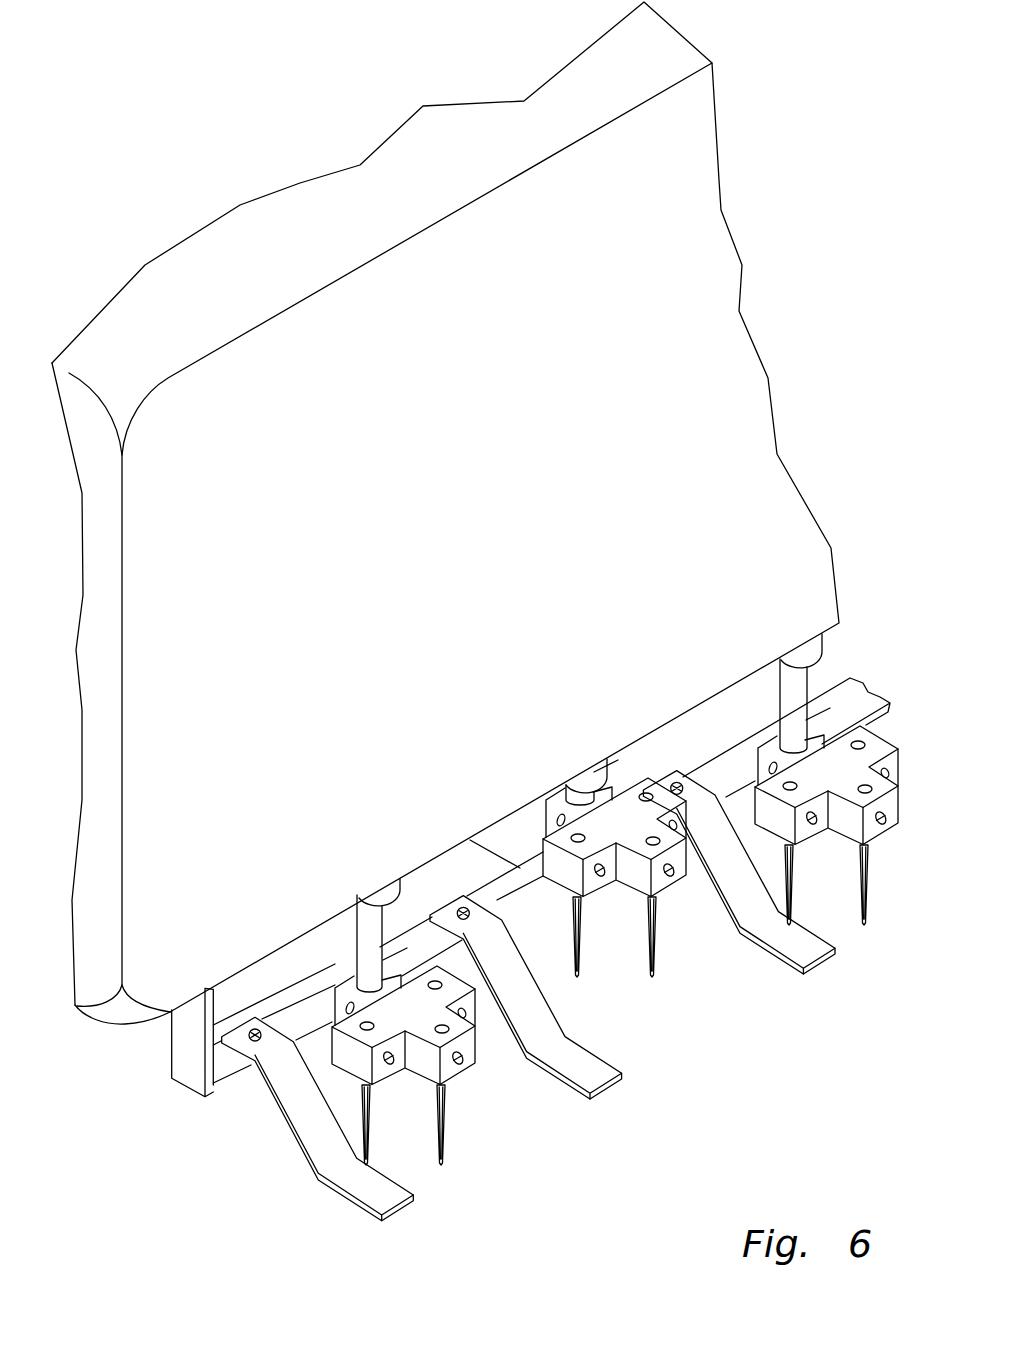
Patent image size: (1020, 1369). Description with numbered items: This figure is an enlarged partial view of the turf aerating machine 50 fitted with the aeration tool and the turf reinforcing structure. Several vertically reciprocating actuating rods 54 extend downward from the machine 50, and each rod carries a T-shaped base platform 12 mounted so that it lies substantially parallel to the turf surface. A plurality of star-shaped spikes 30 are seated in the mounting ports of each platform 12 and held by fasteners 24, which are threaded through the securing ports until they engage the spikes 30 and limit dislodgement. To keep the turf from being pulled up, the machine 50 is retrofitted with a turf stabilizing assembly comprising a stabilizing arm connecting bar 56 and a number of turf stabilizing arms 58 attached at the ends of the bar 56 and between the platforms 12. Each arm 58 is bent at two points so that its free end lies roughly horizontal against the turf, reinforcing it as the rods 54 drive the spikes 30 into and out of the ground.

The base platform 12 is at (688, 903).
The fastener 24 is at (461, 1060).
The star-shaped spike 30 is at (447, 1162).
The turf aerating machine 50 is at (415, 700).
The actuating rod 54 is at (372, 948).
The stabilizing arm connecting bar 56 is at (207, 1100).
The turf stabilizing arm 58 is at (608, 1083).